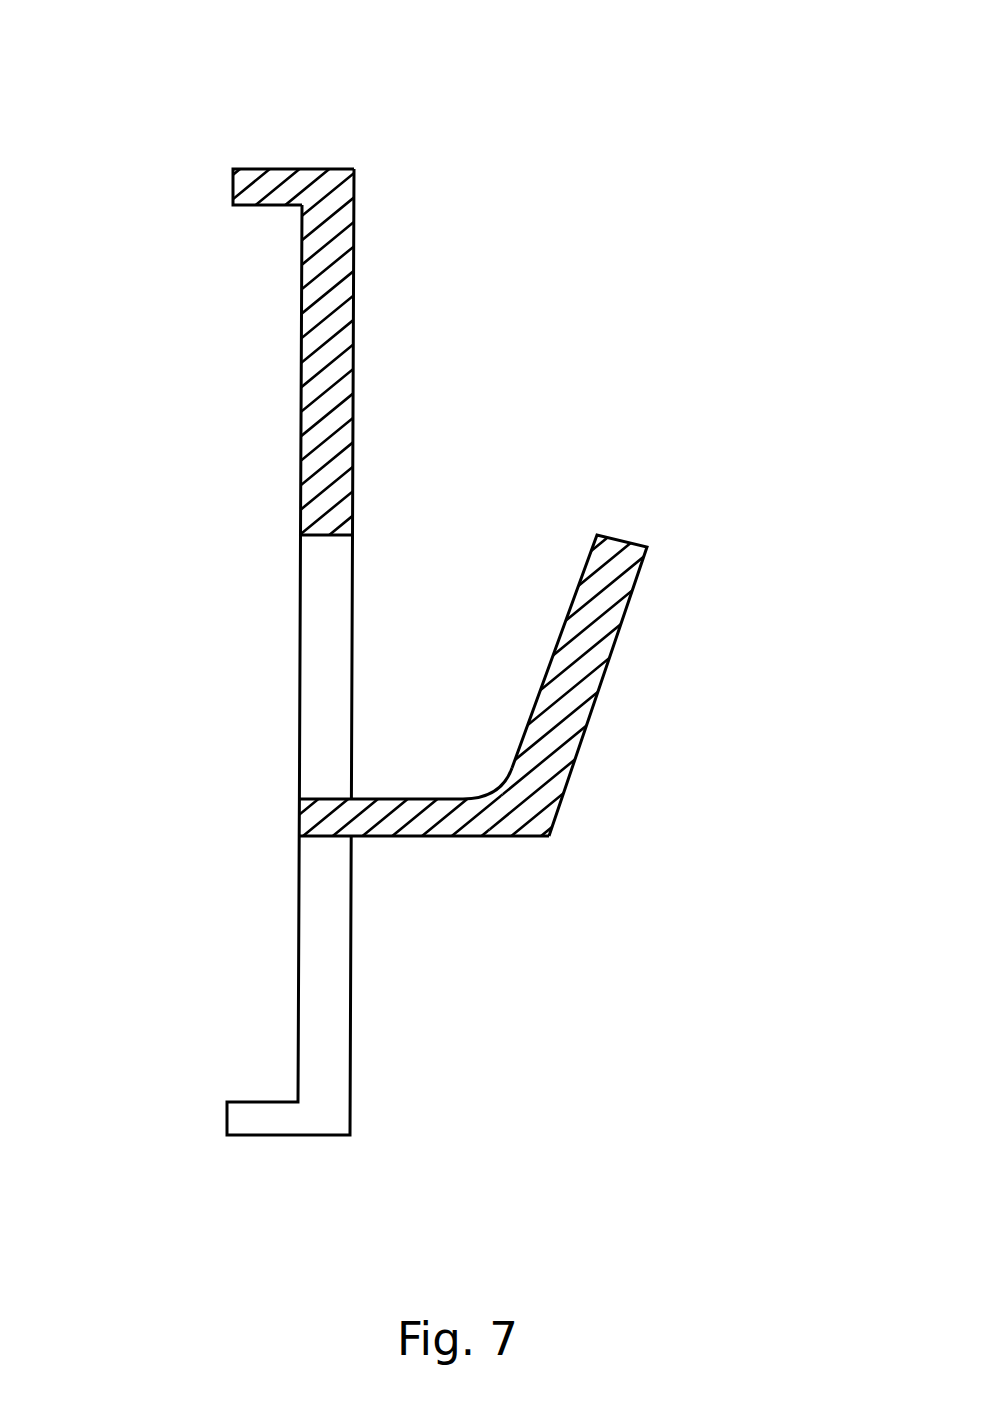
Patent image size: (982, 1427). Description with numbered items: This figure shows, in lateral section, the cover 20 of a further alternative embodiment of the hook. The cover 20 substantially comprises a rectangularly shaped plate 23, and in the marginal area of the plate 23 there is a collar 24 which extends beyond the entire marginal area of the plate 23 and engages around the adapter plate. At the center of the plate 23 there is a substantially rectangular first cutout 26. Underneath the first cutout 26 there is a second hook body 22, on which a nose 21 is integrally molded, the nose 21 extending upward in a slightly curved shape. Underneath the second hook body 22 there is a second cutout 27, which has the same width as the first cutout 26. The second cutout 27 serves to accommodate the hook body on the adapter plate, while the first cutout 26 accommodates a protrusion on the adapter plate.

The cover 20 is at (491, 713).
The nose 21 is at (593, 642).
The second hook body 22 is at (423, 822).
The plate 23 is at (323, 383).
The collar 24 is at (268, 193).
The first cutout 26 is at (330, 652).
The second cutout 27 is at (328, 988).